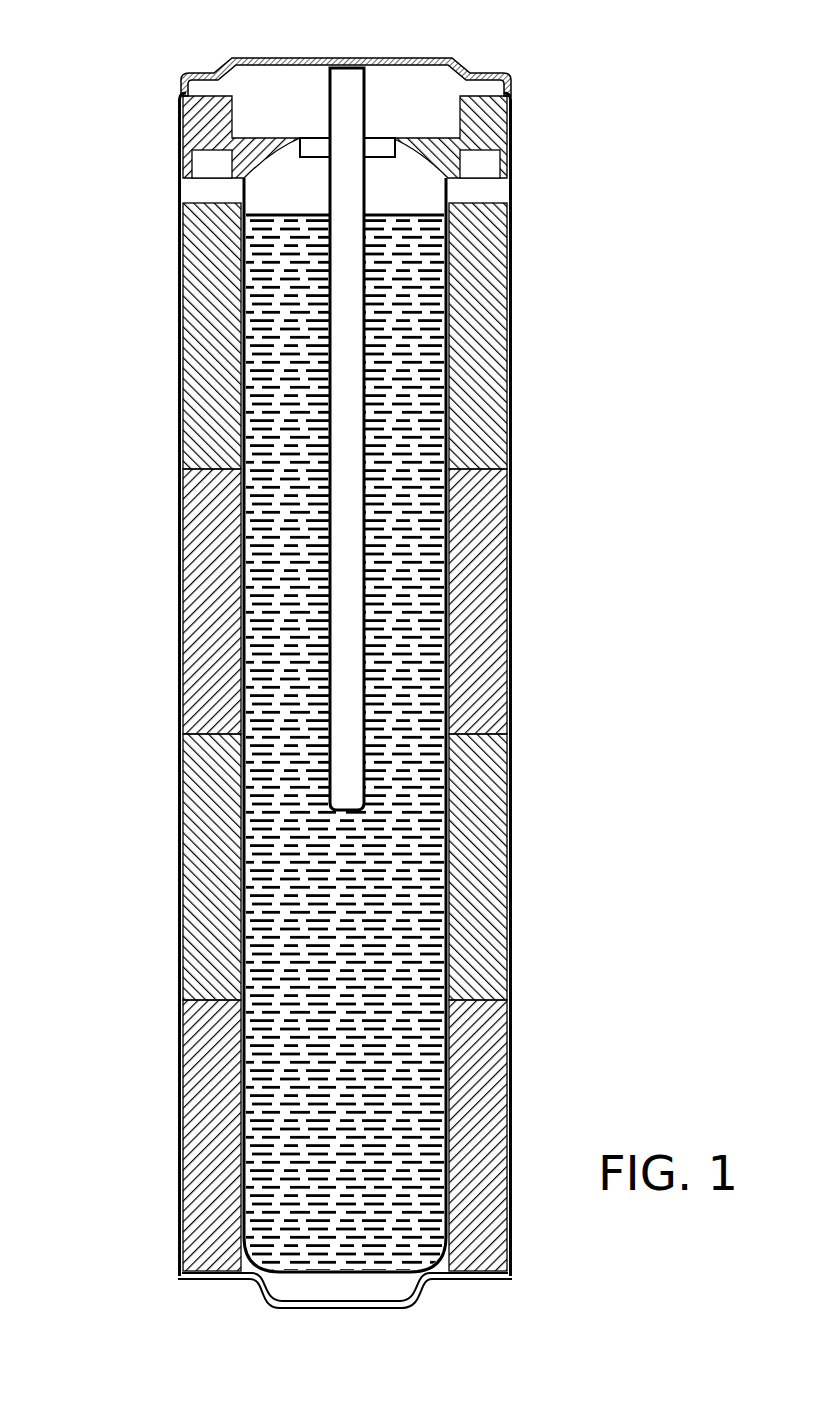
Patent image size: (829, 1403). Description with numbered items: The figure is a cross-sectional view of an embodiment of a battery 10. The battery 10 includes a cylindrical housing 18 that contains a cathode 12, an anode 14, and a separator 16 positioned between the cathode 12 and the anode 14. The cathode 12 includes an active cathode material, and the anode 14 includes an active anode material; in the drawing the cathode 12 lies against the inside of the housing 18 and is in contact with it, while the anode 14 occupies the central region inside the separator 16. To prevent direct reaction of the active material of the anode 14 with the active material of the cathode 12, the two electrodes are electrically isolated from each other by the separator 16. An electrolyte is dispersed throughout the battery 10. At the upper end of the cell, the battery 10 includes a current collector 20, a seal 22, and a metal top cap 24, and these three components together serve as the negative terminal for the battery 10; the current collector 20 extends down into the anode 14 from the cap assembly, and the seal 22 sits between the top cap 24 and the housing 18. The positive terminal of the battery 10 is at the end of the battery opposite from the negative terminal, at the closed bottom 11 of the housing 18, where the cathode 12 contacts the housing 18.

The battery 10 is at (391, 676).
The can bottom / negative terminal end 11 is at (372, 1322).
The cathode 12 is at (487, 287).
The anode 14 is at (405, 892).
The separator 16 is at (240, 608).
The cylindrical housing 18 is at (178, 422).
The current collector 20 is at (348, 595).
The seal 22 is at (196, 158).
The metal top cap 24 is at (457, 60).